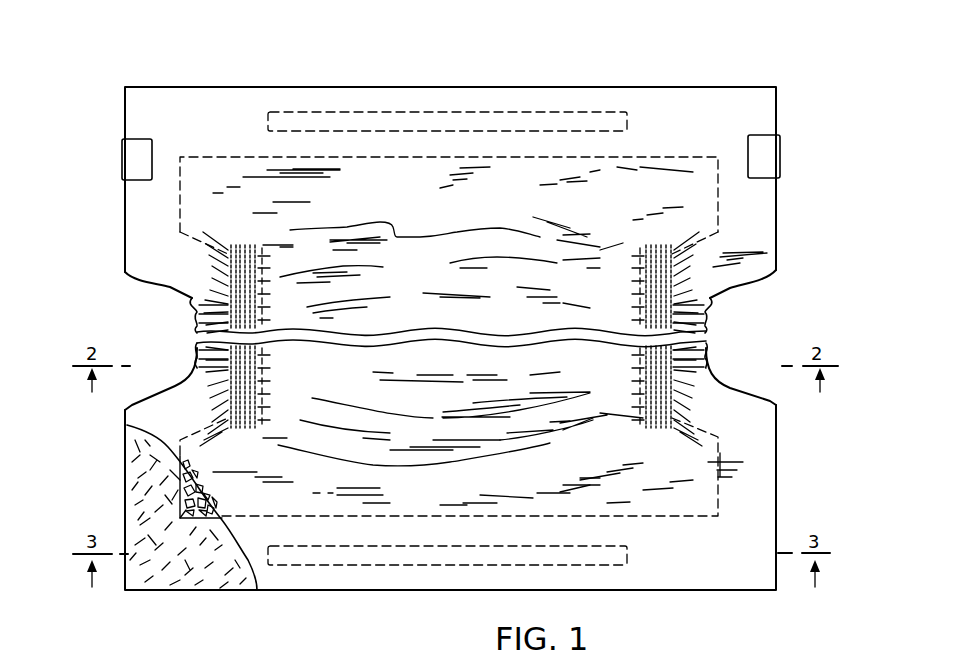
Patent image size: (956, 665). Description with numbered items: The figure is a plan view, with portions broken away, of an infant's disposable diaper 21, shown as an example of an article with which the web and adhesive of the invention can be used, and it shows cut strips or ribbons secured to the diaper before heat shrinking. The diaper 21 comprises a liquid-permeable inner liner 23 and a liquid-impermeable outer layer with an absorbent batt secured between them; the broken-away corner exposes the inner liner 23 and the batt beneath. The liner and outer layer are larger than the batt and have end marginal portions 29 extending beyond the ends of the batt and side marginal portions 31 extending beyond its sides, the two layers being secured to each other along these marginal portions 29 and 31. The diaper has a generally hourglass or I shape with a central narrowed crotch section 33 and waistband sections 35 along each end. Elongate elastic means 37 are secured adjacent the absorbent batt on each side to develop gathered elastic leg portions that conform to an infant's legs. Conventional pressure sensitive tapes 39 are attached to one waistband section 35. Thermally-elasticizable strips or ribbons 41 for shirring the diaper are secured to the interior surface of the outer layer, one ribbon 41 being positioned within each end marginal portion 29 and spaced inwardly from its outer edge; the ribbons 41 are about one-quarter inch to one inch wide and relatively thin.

The disposable diaper 21 is at (775, 68).
The liquid-permeable inner liner 23 is at (128, 456).
The end marginal portions 29 is at (695, 97).
The side marginal portions 31 is at (162, 232).
The central narrowed crotch section 33 is at (147, 286).
The waistband sections 35 is at (127, 488).
The elongate elastic means 37 is at (190, 304).
The pressure sensitive tapes 39 is at (134, 159).
The thermally-elasticizable strips or ribbons 41 is at (518, 112).